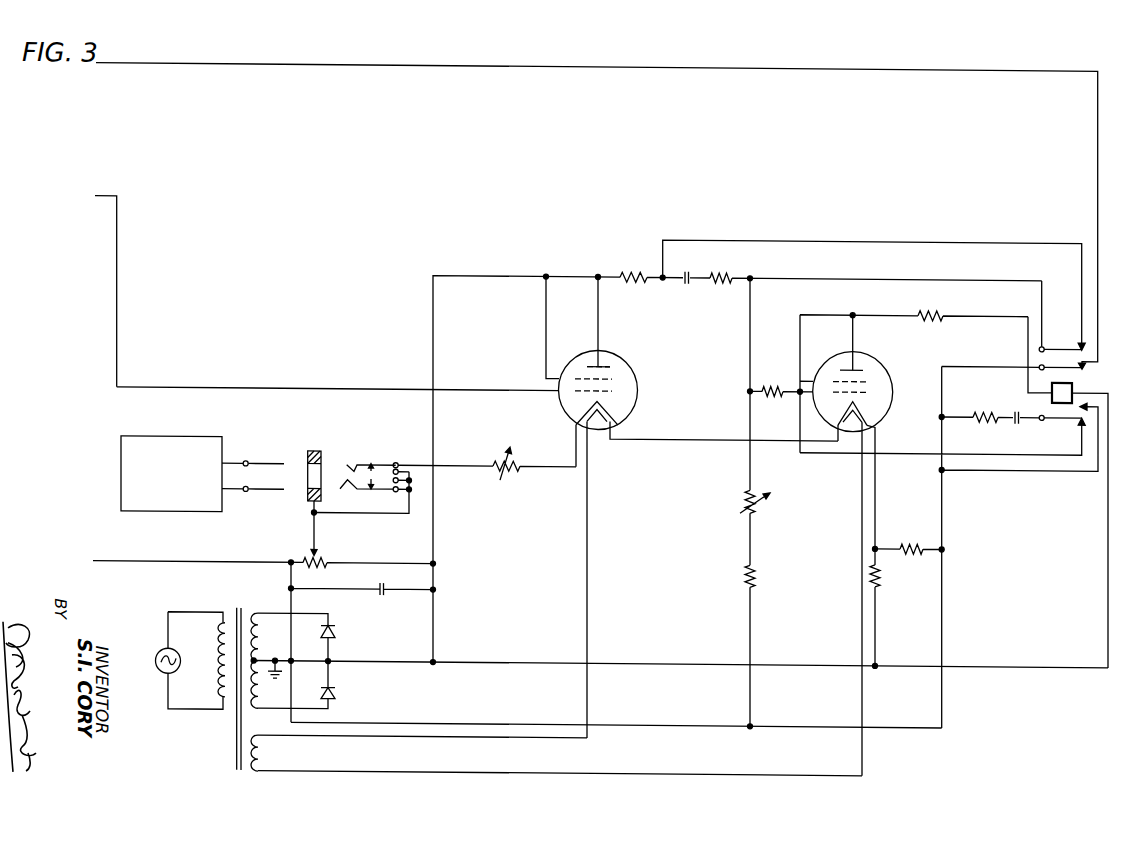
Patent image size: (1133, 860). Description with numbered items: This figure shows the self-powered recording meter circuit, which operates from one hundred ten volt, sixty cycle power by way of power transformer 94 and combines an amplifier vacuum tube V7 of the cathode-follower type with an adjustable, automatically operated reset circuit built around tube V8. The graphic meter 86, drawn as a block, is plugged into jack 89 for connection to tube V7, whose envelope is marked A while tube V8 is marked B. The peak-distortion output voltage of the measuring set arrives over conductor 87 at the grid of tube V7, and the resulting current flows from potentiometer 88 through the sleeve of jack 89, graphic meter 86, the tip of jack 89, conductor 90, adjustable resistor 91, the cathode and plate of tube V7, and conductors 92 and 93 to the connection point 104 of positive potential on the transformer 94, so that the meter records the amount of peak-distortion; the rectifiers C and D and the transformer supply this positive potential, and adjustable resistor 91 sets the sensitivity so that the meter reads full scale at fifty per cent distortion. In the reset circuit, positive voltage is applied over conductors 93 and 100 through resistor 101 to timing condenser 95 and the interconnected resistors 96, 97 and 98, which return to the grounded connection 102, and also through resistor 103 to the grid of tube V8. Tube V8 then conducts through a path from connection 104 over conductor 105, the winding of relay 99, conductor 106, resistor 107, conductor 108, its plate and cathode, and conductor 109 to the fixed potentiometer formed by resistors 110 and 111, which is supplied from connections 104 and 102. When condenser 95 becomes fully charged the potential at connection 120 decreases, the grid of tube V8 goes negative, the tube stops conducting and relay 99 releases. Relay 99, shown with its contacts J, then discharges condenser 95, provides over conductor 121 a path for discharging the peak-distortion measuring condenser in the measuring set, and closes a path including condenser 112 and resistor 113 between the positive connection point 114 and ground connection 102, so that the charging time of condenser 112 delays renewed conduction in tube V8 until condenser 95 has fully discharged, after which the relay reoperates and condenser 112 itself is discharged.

The graphic meter 86 is at (189, 440).
The conductor 87 is at (117, 197).
The potentiometer 88 is at (326, 561).
The jack 89 is at (313, 454).
The conductor 90 is at (472, 467).
The adjustable resistor 91 is at (520, 460).
The conductor 92 is at (600, 322).
The conductor 93 is at (470, 277).
The power transformer 94 is at (232, 706).
The condenser 95 is at (687, 270).
The resistor 96 is at (715, 285).
The resistor 97 is at (760, 502).
The resistor 98 is at (755, 576).
The relay 99 is at (1062, 379).
The conductor 100 is at (611, 263).
The resistor 101 is at (647, 255).
The connection 102 is at (752, 723).
The resistor 103 is at (773, 387).
The connection point 104 is at (433, 667).
The conductor 105 is at (497, 664).
The conductor 106 is at (990, 311).
The resistor 107 is at (933, 308).
The conductor 108 is at (855, 313).
The conductor 109 is at (875, 502).
The resistor 110 is at (918, 555).
The resistor 111 is at (871, 571).
The condenser 112 is at (1017, 425).
The resistor 113 is at (990, 428).
The connection point 114 is at (798, 396).
The connection 120 is at (750, 390).
The conductor 121 is at (122, 67).
The vacuum tube A is at (580, 352).
The vacuum tube B is at (832, 354).
The amplifier vacuum tube V7 is at (602, 425).
The tube V8 is at (852, 423).
The rectifier diode C is at (336, 631).
The rectifier diode D is at (336, 695).
The jack J is at (1080, 525).